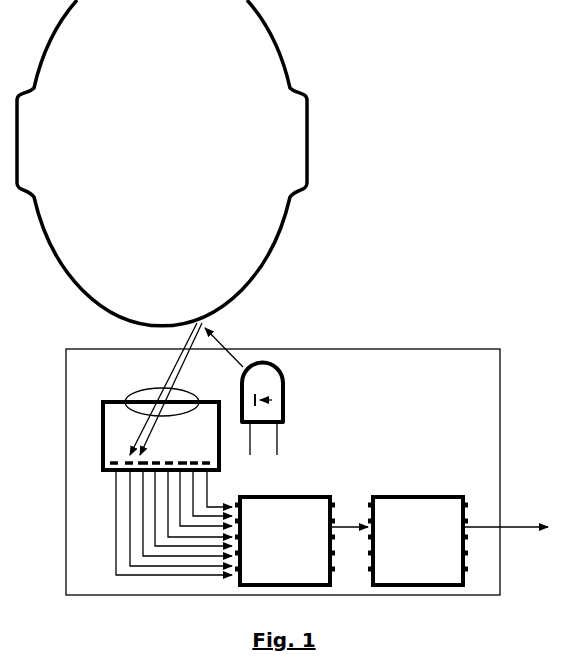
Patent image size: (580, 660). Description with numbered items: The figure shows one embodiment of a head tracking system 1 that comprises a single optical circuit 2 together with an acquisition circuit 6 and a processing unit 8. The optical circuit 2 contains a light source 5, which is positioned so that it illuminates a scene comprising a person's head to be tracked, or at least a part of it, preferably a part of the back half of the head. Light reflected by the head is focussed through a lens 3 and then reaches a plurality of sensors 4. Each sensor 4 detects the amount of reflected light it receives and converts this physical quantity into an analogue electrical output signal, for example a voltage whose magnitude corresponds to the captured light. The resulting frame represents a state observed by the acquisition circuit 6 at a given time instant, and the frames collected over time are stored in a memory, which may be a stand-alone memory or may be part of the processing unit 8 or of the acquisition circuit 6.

The head tracking system 1 is at (283, 348).
The optical circuit 2 is at (103, 437).
The lens 3 is at (150, 397).
The sensors 4 is at (105, 463).
The light source 5 is at (285, 392).
The acquisition circuit 6 is at (285, 495).
The processing unit 8 is at (420, 495).